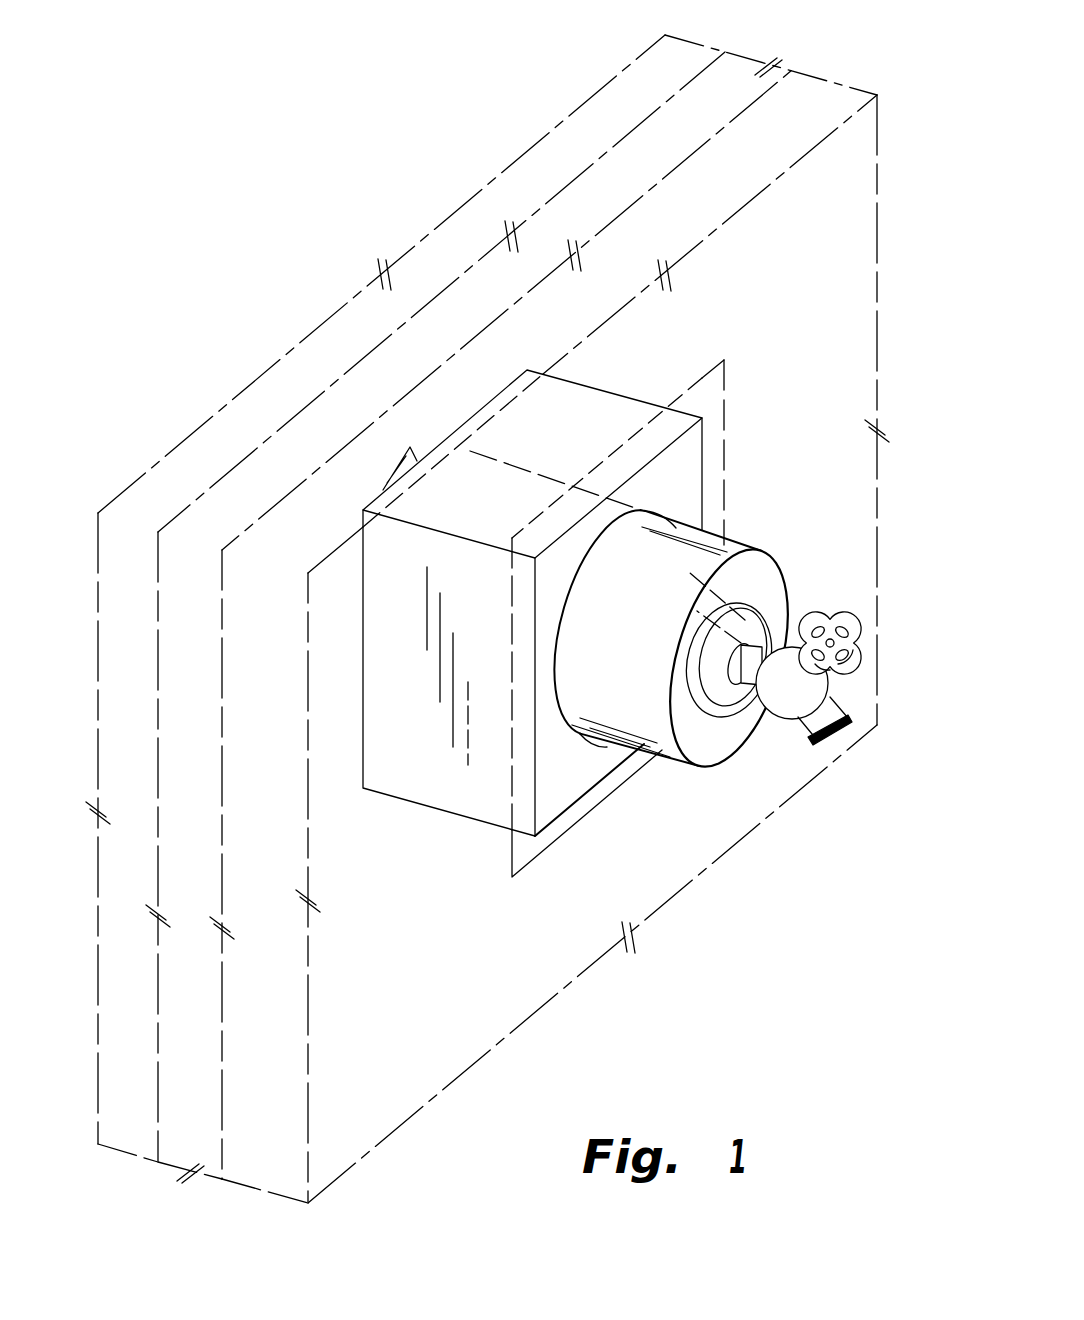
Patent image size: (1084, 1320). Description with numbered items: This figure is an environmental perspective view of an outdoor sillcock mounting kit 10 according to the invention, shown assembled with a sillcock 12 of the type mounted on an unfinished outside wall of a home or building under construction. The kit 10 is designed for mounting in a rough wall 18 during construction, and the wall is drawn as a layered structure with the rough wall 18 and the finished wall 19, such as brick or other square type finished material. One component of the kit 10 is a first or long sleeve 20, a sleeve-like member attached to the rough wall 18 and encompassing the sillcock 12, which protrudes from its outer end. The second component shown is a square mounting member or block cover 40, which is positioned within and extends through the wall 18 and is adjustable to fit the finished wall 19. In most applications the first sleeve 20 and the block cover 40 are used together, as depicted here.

The outdoor sillcock mounting kit 10 is at (238, 160).
The sillcock 12 is at (787, 717).
The rough wall 18 is at (667, 130).
The finished wall 19 is at (806, 107).
The first sleeve 20 is at (786, 562).
The block cover 40 is at (703, 463).